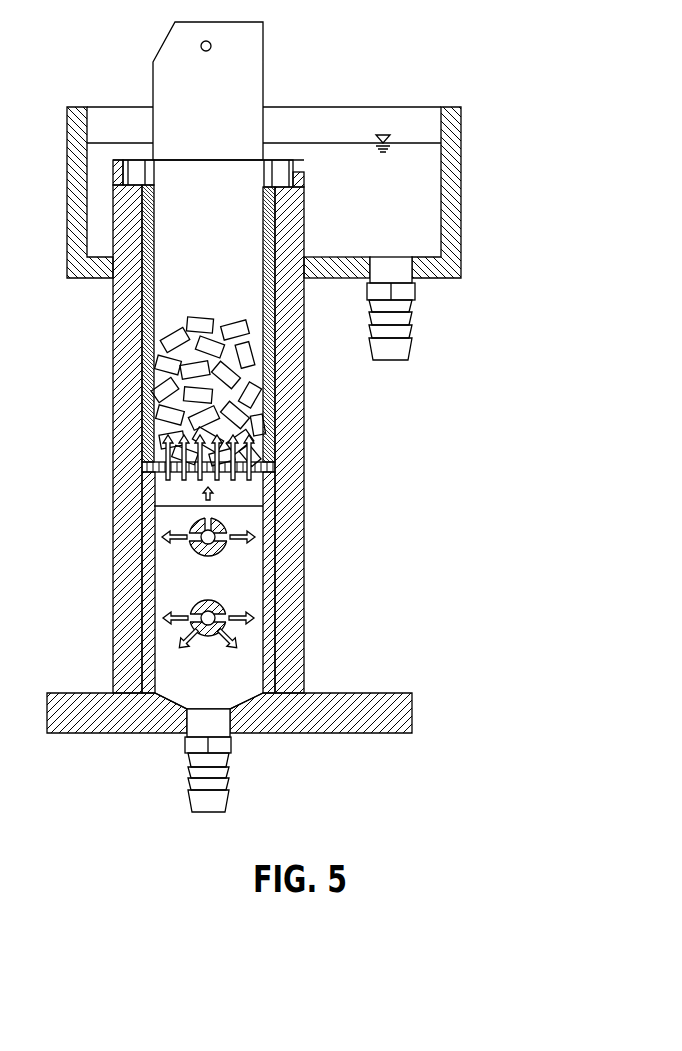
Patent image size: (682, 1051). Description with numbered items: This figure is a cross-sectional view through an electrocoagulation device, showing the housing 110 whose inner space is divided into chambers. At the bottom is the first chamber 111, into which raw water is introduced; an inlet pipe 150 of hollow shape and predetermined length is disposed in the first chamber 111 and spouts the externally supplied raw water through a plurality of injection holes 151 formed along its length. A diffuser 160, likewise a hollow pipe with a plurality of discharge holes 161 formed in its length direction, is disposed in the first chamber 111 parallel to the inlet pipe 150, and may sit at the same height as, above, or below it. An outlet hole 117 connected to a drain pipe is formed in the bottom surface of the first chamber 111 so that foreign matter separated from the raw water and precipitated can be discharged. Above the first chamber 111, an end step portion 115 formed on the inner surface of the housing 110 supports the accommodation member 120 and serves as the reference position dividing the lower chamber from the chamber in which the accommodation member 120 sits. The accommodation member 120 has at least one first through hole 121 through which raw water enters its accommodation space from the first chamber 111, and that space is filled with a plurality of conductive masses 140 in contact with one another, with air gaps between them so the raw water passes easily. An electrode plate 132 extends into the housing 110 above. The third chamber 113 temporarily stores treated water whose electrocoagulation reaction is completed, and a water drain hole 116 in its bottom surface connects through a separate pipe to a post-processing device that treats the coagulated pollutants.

The housing 110 is at (483, 145).
The first chamber 111 is at (186, 677).
The third chamber 113 is at (396, 205).
The end step portion 115 is at (272, 468).
The water drain hole 116 is at (432, 272).
The outlet hole 117 is at (245, 700).
The accommodation member 120 is at (140, 329).
The first through hole 121 is at (143, 465).
The electrode plate 132 is at (263, 45).
The conductive masses 140 is at (258, 372).
The inlet pipe 150 is at (219, 604).
The injection holes 151 is at (232, 623).
The diffuser 160 is at (197, 555).
The discharge holes 161 is at (194, 522).